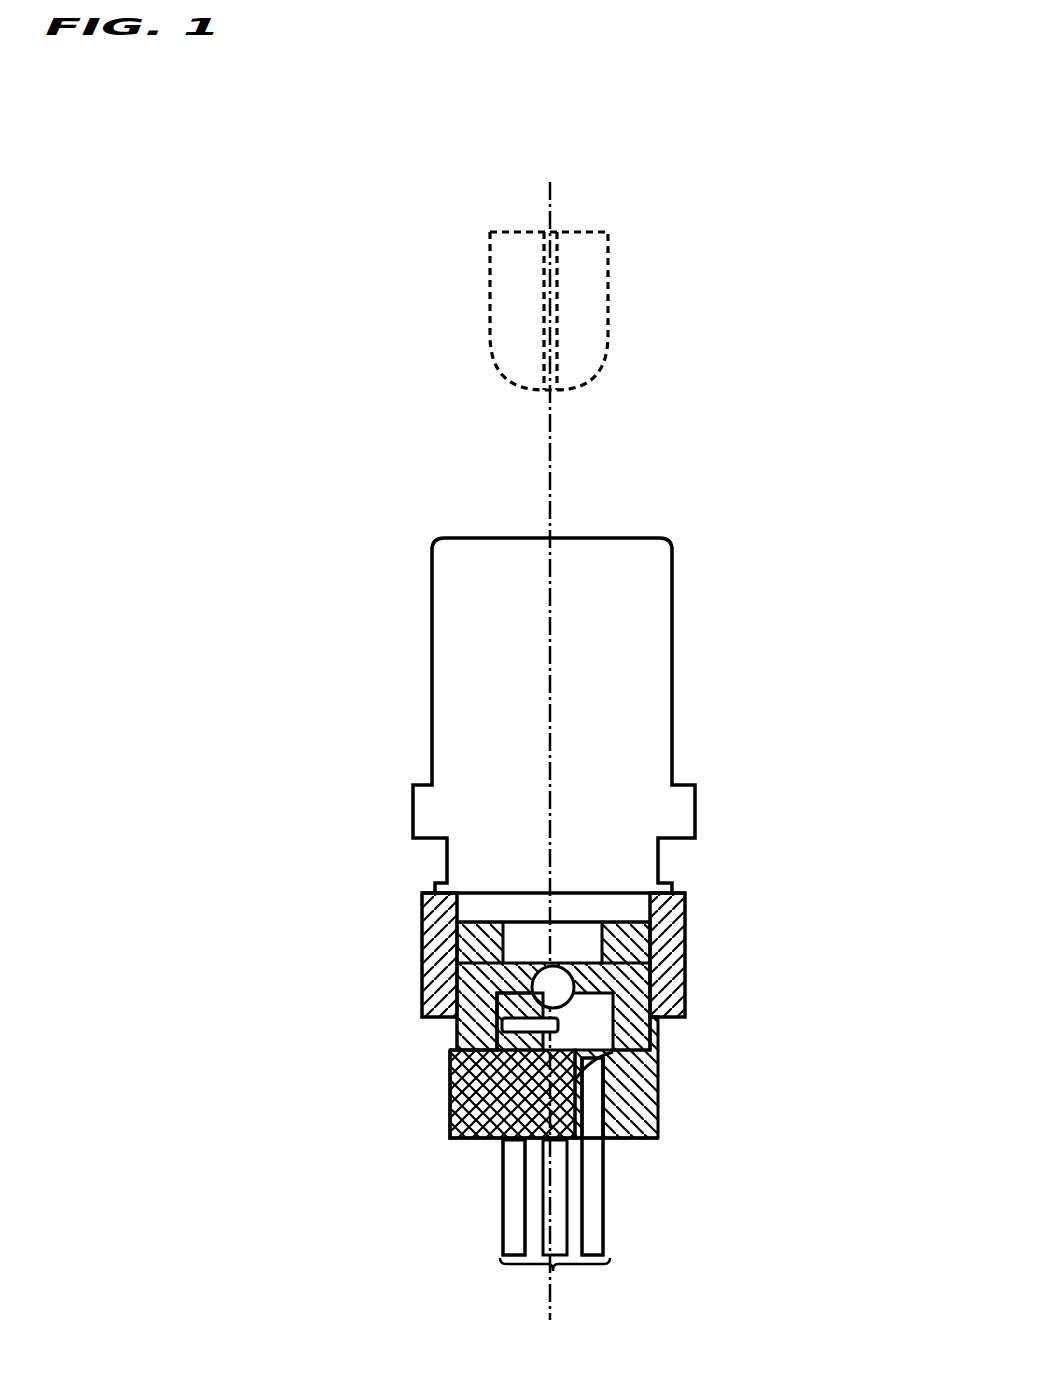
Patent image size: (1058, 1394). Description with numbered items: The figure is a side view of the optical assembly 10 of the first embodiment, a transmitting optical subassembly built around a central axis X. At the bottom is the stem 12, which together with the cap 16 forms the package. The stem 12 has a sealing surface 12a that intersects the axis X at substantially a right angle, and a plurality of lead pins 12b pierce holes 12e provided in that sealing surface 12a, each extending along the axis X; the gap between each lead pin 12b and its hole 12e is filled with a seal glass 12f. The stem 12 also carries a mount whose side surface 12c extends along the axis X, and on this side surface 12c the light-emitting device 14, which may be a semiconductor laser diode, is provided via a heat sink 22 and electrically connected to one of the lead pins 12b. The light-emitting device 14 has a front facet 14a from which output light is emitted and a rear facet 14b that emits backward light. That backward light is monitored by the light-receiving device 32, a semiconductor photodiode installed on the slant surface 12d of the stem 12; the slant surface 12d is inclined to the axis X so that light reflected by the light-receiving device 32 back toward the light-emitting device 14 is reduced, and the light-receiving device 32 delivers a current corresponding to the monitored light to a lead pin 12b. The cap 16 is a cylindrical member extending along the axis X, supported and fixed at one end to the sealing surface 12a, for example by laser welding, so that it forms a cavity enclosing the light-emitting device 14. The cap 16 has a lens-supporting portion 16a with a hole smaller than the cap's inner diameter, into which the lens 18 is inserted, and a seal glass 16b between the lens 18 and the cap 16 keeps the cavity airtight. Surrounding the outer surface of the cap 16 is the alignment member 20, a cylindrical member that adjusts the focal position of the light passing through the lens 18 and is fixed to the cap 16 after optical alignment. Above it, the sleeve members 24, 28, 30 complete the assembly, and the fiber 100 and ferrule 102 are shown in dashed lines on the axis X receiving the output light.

The optical assembly 10 is at (641, 682).
The stem 12 is at (581, 1155).
The sealing surface 12a is at (660, 1097).
The lead pins 12b is at (555, 1175).
The side surface of the mount 12c is at (452, 1130).
The slant surface 12d is at (470, 1145).
The holes 12e is at (603, 1145).
The seal glass 12f is at (645, 1143).
The light-emitting device 14 is at (544, 1065).
The front facet 14a is at (497, 1032).
The rear facet 14b is at (460, 1063).
The cap 16 is at (618, 986).
The lens-supporting portion 16a is at (684, 951).
The seal glass 16b is at (688, 990).
The lens 18 is at (532, 977).
The alignment member 20 is at (688, 912).
The heat sink 22 is at (503, 1042).
The sleeve member 24 is at (624, 715).
The sleeve member 28 is at (624, 715).
The sleeve member 30 is at (643, 663).
The light-receiving device 32 is at (612, 1052).
The optical fiber 100 is at (560, 315).
The ferrule 102 is at (595, 345).
The axis X is at (554, 224).